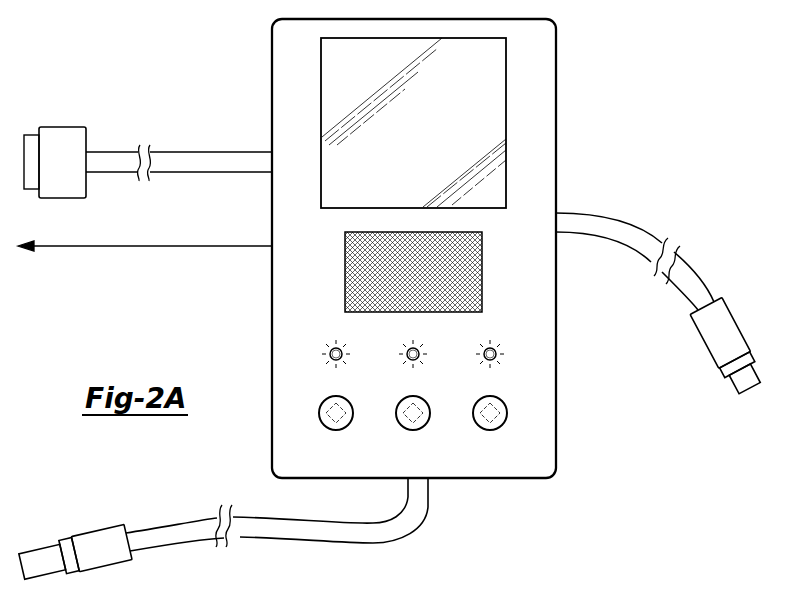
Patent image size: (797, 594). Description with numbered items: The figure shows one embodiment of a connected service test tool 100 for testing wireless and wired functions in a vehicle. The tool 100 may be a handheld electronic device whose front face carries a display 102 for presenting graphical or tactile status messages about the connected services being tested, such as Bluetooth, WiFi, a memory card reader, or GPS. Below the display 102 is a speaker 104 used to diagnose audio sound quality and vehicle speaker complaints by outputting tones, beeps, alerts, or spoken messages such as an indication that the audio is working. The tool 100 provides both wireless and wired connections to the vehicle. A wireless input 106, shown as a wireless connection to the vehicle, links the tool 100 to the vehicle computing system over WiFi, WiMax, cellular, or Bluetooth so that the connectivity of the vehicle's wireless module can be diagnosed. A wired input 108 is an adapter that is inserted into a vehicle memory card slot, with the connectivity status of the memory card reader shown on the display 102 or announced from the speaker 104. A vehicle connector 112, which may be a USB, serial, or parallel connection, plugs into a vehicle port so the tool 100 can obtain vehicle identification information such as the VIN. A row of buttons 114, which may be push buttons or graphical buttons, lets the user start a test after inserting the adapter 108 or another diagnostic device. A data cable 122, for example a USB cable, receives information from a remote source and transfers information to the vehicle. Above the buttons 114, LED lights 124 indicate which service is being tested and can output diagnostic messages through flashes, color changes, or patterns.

The tool 100 is at (140, 65).
The display 102 is at (506, 70).
The speaker 104 is at (482, 302).
The wireless input 106 is at (118, 247).
The wired input 108 is at (210, 151).
The vehicle connector 112 is at (605, 213).
The buttons 114 is at (336, 431).
The data cable 122 is at (407, 535).
The LED lights 124 is at (497, 355).